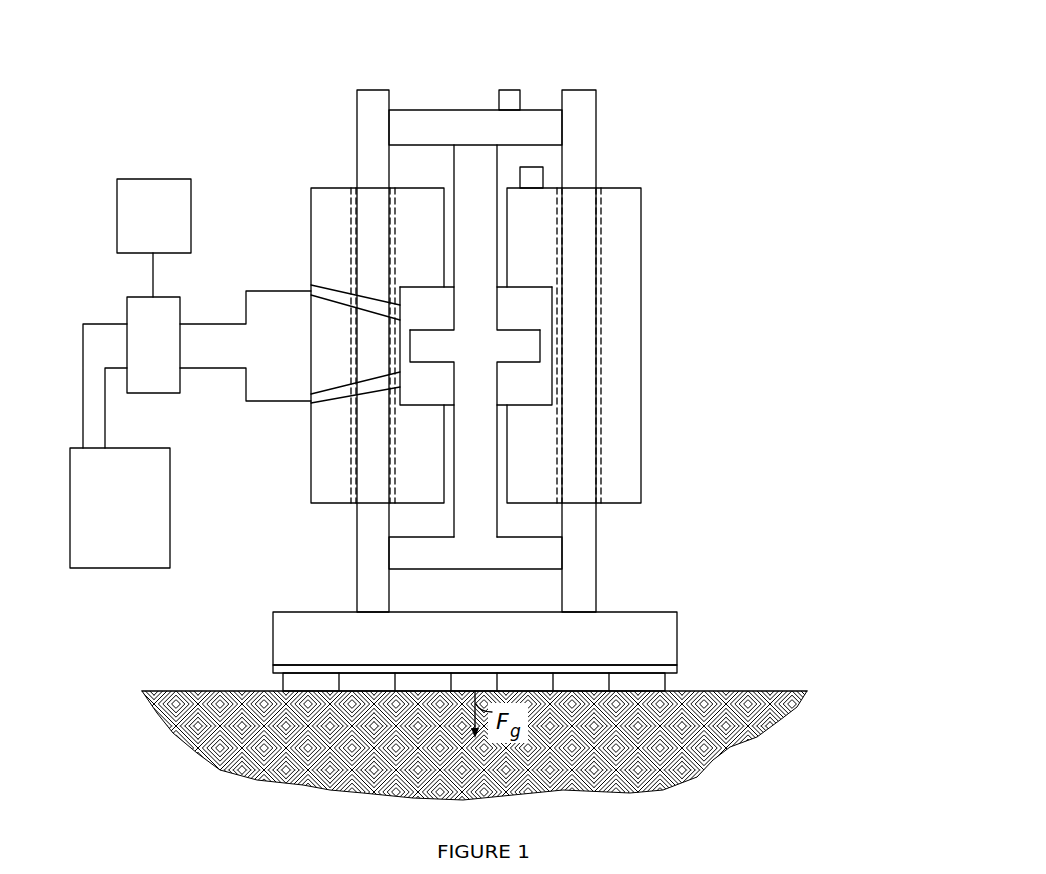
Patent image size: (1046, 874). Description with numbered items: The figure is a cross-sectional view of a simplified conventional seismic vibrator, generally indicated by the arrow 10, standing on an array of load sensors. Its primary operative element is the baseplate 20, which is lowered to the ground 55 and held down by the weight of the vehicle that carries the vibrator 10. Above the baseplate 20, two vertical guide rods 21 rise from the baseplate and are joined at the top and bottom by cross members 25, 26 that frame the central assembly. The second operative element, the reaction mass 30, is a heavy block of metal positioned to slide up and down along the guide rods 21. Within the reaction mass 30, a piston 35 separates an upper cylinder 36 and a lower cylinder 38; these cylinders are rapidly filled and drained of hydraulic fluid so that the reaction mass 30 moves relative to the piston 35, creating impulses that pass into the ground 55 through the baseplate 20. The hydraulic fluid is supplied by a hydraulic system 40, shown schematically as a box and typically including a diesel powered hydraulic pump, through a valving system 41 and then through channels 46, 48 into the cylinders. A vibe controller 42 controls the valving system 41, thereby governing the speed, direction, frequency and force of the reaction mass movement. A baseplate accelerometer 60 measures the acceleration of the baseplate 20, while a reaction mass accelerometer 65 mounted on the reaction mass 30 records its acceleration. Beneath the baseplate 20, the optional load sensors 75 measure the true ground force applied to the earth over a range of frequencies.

The seismic vibrator 10 is at (746, 45).
The baseplate 20 is at (677, 638).
The guide rods 21 is at (357, 140).
The upper crossbar 25 is at (461, 110).
The lower crossbar 26 is at (475, 570).
The reaction mass 30 is at (641, 240).
The piston 35 is at (527, 347).
The upper cylinder 36 is at (527, 307).
The lower cylinder 38 is at (527, 385).
The hydraulic system 40 is at (131, 523).
The valving system 41 is at (164, 358).
The vibe controller 42 is at (164, 229).
The channel 46 is at (282, 291).
The channel 48 is at (282, 401).
The ground 55 is at (218, 763).
The baseplate accelerometer 60 is at (511, 90).
The reaction mass accelerometer 65 is at (543, 178).
The load sensors 75 is at (395, 686).